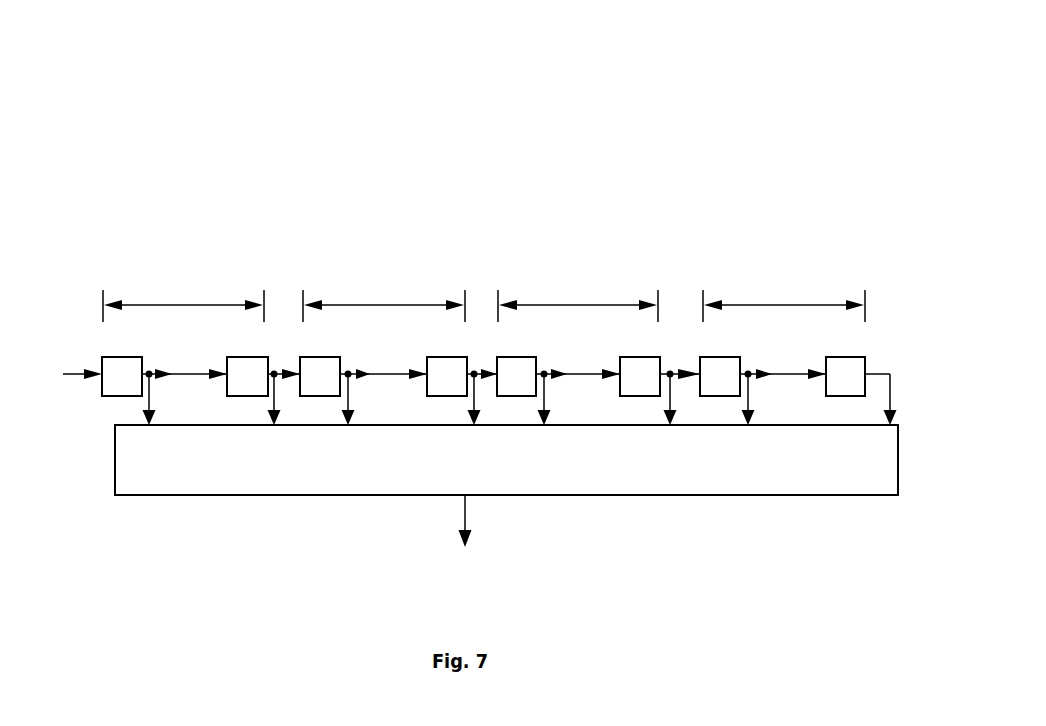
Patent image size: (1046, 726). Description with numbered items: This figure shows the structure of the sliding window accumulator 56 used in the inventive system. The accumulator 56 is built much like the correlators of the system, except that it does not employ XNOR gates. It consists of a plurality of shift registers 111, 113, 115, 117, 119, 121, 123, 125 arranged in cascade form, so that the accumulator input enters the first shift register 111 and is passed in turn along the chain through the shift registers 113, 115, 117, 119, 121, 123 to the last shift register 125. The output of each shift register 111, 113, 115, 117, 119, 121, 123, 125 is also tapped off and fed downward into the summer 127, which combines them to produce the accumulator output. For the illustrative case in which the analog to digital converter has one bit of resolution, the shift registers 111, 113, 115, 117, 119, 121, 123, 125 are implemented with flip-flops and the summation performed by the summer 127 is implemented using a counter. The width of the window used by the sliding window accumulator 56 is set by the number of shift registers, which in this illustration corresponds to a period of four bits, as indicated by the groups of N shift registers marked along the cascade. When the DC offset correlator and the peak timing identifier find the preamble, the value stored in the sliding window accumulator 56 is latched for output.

The sliding window accumulator 56 is at (642, 141).
The shift register 111 is at (102, 363).
The shift register 113 is at (267, 357).
The shift register 115 is at (300, 357).
The shift register 117 is at (465, 357).
The shift register 119 is at (497, 357).
The shift register 121 is at (660, 357).
The shift register 123 is at (700, 355).
The shift register 125 is at (867, 362).
The summer 127 is at (253, 495).